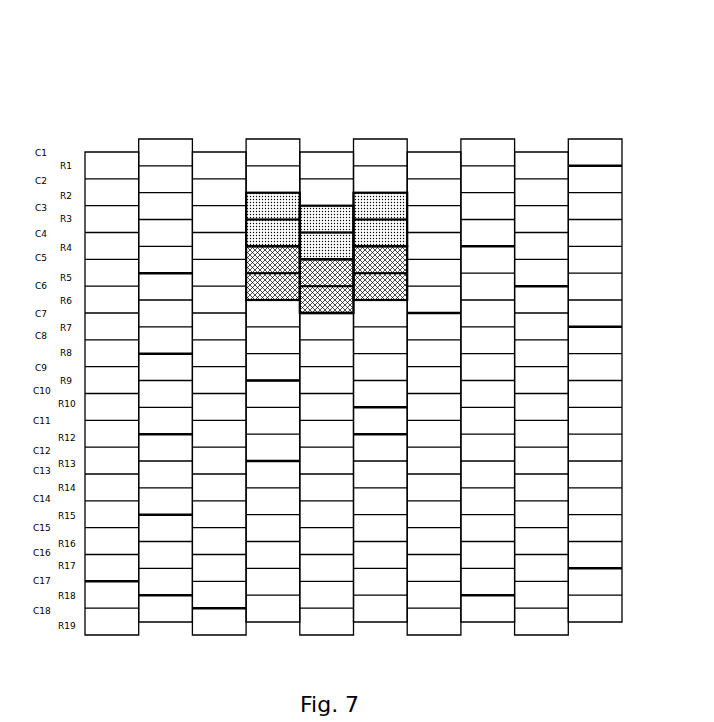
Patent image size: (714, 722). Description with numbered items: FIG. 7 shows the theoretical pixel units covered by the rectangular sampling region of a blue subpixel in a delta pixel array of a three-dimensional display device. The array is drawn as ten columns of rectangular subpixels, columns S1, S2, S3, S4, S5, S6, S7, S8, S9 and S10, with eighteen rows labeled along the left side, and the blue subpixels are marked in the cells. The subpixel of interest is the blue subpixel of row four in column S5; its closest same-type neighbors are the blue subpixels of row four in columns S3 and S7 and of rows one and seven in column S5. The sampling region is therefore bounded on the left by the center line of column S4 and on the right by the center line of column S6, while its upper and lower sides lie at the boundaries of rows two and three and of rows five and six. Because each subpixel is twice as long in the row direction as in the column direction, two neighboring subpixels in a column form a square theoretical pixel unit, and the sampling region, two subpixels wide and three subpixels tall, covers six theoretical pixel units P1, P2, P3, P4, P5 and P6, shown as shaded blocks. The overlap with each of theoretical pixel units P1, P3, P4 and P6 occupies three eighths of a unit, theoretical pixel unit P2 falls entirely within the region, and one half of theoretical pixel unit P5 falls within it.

The theoretical pixel unit P1 is at (258, 202).
The theoretical pixel unit P2 is at (328, 217).
The theoretical pixel unit P3 is at (367, 193).
The theoretical pixel unit P4 is at (250, 270).
The theoretical pixel unit P5 is at (313, 270).
The theoretical pixel unit P6 is at (398, 260).
The subpixel column S1 is at (112, 377).
The subpixel column S2 is at (166, 370).
The subpixel column S3 is at (219, 377).
The subpixel column S4 is at (273, 370).
The subpixel column S5 is at (327, 377).
The subpixel column S6 is at (381, 370).
The subpixel column S7 is at (434, 377).
The subpixel column S8 is at (488, 370).
The subpixel column S9 is at (542, 377).
The subpixel column S10 is at (595, 370).